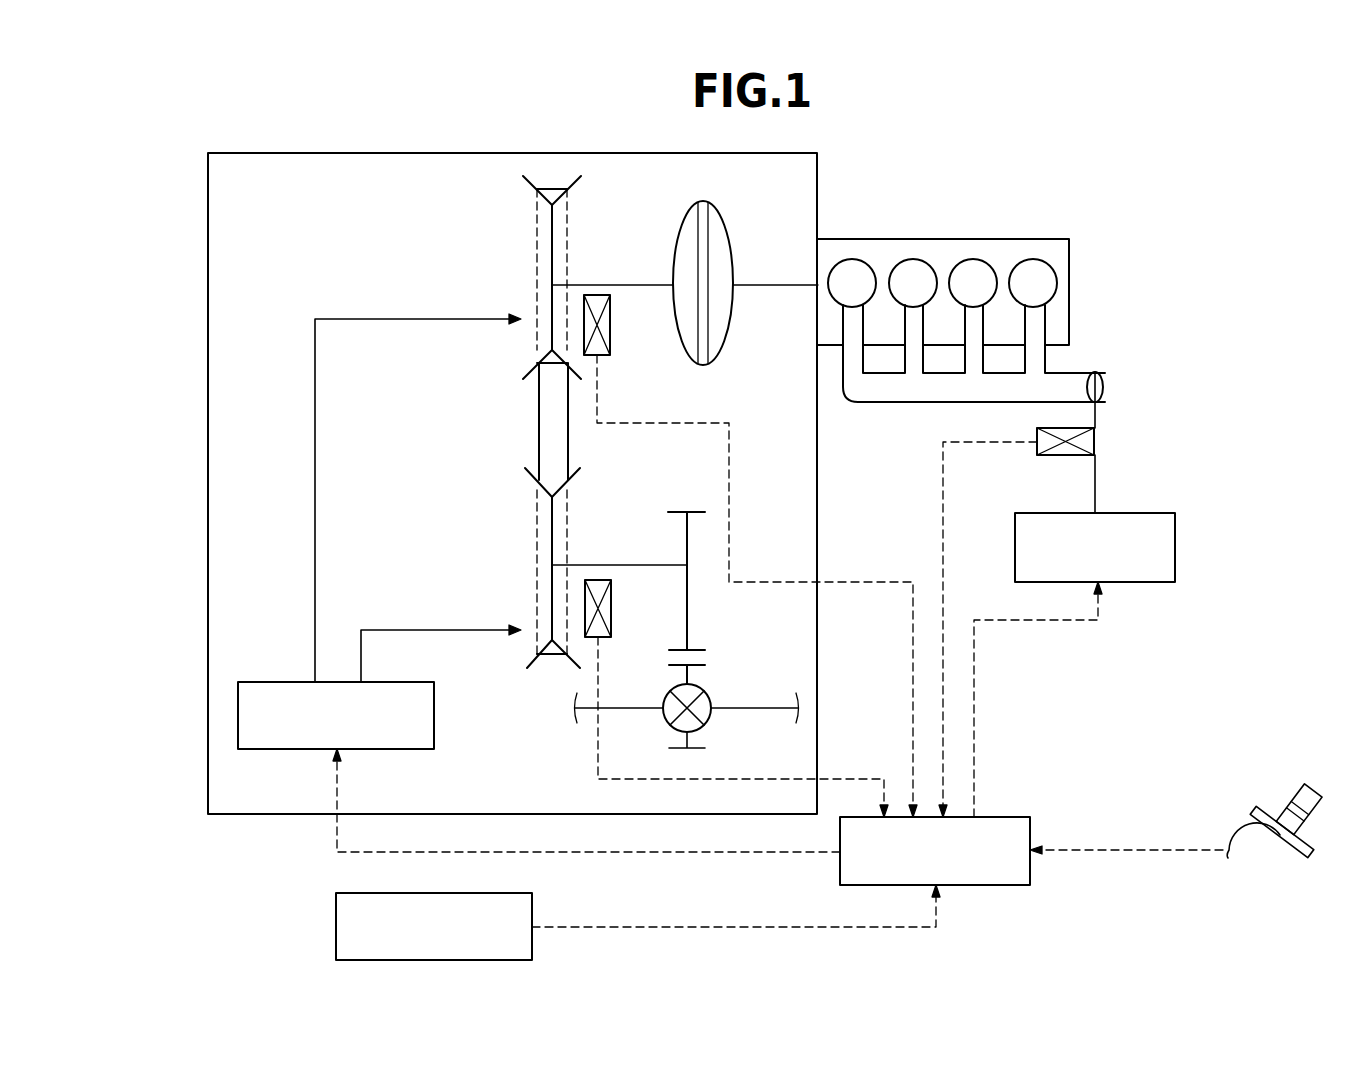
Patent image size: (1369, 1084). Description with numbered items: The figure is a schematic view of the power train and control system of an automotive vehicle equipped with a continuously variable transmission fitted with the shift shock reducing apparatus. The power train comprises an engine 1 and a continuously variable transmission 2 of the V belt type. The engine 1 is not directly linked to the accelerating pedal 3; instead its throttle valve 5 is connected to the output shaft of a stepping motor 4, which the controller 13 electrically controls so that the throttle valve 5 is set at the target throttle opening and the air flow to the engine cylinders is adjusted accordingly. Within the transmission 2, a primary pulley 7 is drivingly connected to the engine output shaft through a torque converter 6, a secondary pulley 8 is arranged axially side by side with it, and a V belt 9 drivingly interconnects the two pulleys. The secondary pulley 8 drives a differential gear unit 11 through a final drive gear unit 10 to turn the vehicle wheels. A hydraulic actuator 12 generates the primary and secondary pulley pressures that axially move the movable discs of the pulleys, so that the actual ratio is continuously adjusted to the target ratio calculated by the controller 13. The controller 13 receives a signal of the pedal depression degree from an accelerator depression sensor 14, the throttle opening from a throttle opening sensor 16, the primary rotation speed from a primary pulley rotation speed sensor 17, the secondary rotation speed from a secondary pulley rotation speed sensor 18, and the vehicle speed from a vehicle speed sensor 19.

The engine 1 is at (983, 239).
The continuously variable transmission 2 is at (208, 390).
The accelerating pedal 3 is at (1260, 811).
The stepping motor 4 is at (1175, 548).
The throttle valve 5 is at (1106, 387).
The torque converter 6 is at (730, 230).
The primary pulley 7 is at (537, 188).
The secondary pulley 8 is at (525, 478).
The V belt 9 is at (539, 423).
The final drive gear unit 10 is at (690, 677).
The differential gear unit 11 is at (707, 700).
The hydraulic actuator 12 is at (434, 722).
The controller 13 is at (998, 817).
The accelerator depression sensor 14 is at (1244, 835).
The throttle opening sensor 16 is at (1045, 455).
The primary pulley rotation speed sensor 17 is at (611, 330).
The secondary pulley rotation speed sensor 18 is at (611, 613).
The vehicle speed sensor 19 is at (336, 930).